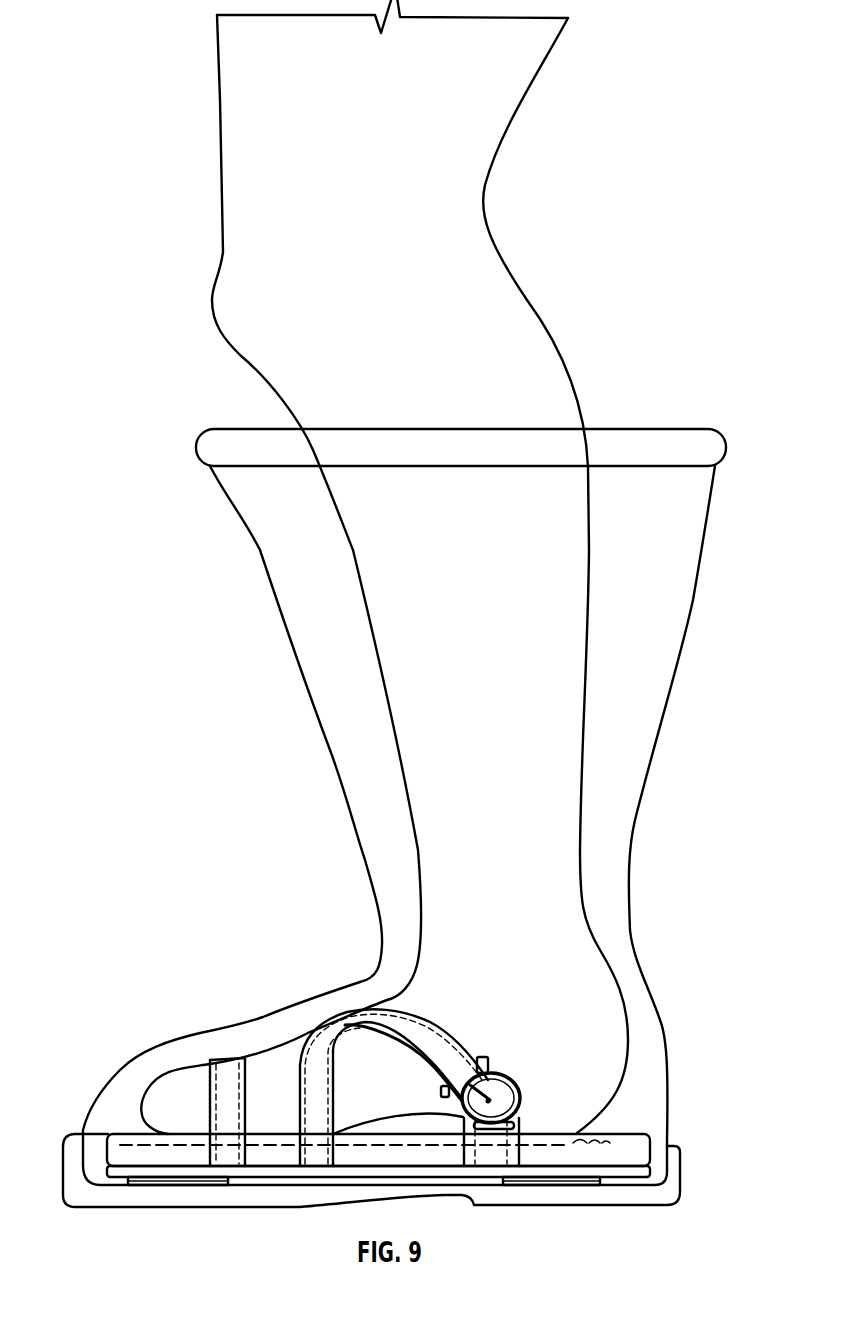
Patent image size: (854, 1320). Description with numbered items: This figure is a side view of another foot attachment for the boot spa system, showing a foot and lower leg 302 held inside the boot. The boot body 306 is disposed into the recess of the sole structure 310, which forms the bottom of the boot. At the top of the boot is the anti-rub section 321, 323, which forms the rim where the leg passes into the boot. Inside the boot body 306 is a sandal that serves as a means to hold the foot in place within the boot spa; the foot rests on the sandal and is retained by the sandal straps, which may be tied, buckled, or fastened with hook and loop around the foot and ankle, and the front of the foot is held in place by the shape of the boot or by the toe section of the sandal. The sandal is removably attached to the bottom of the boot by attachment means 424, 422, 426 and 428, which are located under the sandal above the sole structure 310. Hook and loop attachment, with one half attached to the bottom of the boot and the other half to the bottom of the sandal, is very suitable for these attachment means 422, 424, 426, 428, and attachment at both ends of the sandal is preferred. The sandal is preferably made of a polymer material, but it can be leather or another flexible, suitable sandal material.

The leg and foot of wearer 302 is at (508, 302).
The boot body 306 is at (305, 678).
The sole structure 310 is at (670, 1170).
The anti-rub section 321 is at (683, 445).
The top band / cuff opening 323 is at (469, 412).
The attachment means 422 is at (188, 1177).
The attachment means 424 is at (140, 1183).
The attachment means 426 is at (567, 1177).
The attachment means 428 is at (520, 1183).